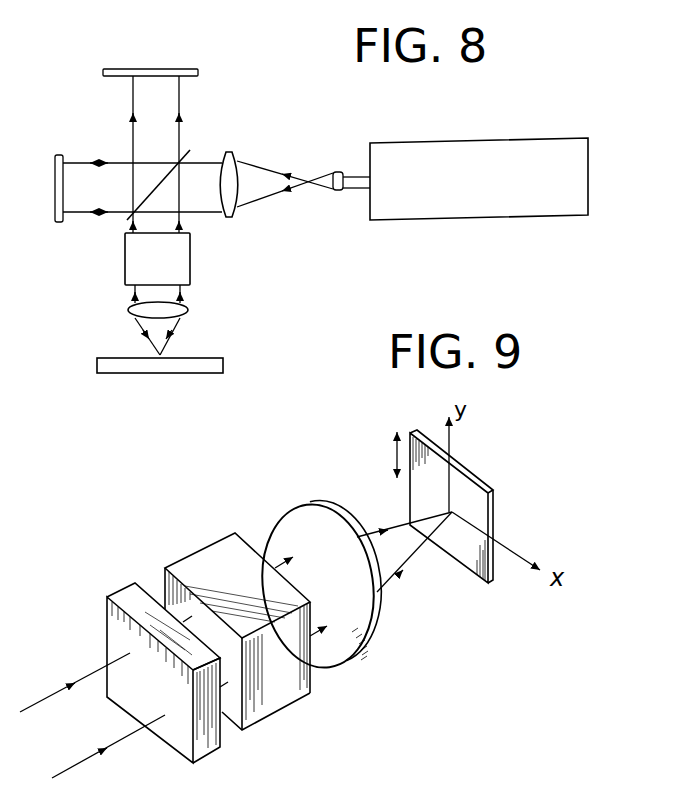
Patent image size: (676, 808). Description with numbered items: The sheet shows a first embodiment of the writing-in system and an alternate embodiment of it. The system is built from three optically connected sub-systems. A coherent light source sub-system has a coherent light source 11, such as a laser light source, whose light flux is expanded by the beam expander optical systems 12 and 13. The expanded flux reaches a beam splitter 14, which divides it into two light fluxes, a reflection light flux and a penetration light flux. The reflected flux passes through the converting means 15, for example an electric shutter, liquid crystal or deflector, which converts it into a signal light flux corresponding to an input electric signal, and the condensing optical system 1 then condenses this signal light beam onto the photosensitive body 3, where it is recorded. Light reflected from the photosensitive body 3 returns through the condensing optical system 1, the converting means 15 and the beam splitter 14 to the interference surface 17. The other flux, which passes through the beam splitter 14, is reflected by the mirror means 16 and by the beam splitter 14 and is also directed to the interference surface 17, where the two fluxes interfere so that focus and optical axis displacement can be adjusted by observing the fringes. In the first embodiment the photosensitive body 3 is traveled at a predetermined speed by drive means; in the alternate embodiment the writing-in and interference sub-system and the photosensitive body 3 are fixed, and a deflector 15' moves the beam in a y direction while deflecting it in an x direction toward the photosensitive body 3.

In FIG. 8, the condensing optical system 1 is at (188, 311).
In FIG. 9, the condensing optical system 1 is at (372, 627).
In FIG. 8, the photosensitive body 3 is at (223, 363).
In FIG. 9, the photosensitive body 3 is at (462, 470).
In FIG. 8, the coherent light source 11 is at (444, 143).
In FIG. 8, the beam expander optical system 12 is at (338, 172).
In FIG. 8, the beam expander optical system 13 is at (228, 152).
In FIG. 8, the beam splitter 14 is at (182, 150).
In FIG. 8, the converting means 15 is at (183, 259).
In FIG. 9, the converting means 15 is at (240, 645).
In FIG. 9, the deflector 15' is at (173, 695).
In FIG. 8, the mirror means 16 is at (58, 155).
In FIG. 8, the interference surface 17 is at (198, 72).